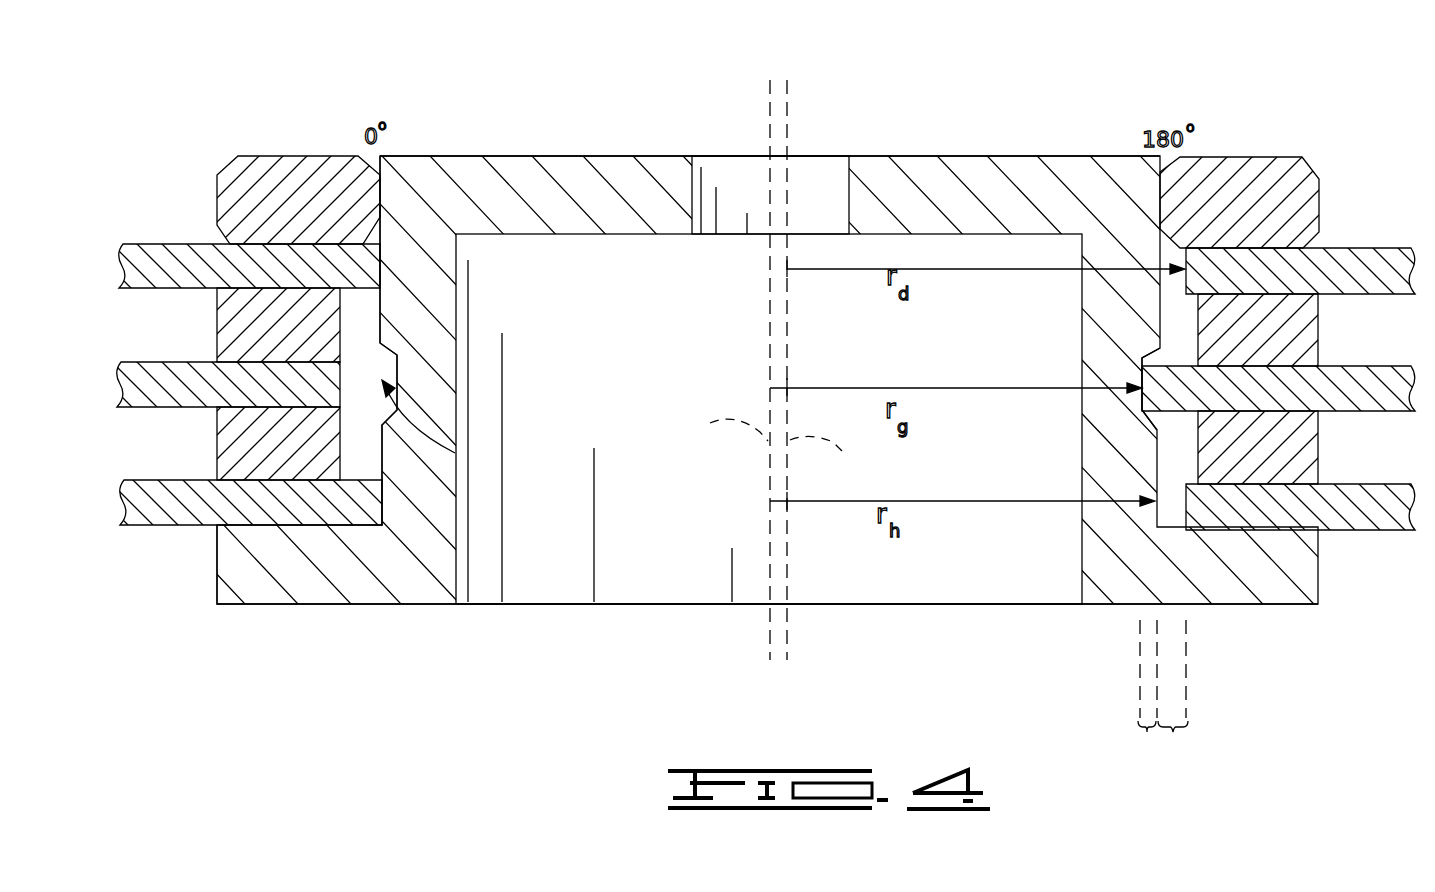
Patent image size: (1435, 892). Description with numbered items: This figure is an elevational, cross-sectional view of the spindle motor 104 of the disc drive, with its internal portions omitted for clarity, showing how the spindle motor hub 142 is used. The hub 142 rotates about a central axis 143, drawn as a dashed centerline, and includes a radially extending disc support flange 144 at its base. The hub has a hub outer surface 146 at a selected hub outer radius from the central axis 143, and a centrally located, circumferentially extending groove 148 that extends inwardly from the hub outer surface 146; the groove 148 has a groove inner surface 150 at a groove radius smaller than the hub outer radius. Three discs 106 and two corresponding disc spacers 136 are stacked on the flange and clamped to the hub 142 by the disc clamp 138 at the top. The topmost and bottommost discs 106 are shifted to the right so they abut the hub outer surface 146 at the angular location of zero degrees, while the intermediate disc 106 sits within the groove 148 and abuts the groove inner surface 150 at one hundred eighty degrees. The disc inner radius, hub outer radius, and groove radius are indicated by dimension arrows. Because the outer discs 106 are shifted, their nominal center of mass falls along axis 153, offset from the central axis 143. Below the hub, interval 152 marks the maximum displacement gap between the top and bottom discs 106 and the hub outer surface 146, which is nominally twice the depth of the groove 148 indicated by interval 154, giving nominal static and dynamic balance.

The spindle motor 104 is at (1037, 112).
The discs 106 is at (1338, 263).
The disc spacers 136 is at (245, 350).
The disc clamp 138 is at (295, 155).
The spindle motor hub 142 is at (502, 165).
The central axis 143 is at (724, 436).
The disc support flange 144 is at (240, 582).
The hub outer surface 146 is at (382, 302).
The groove 148 is at (455, 453).
The groove inner surface 150 is at (1142, 373).
The interval 152 is at (1172, 735).
The axis 153 is at (828, 458).
The interval 154 is at (1140, 740).